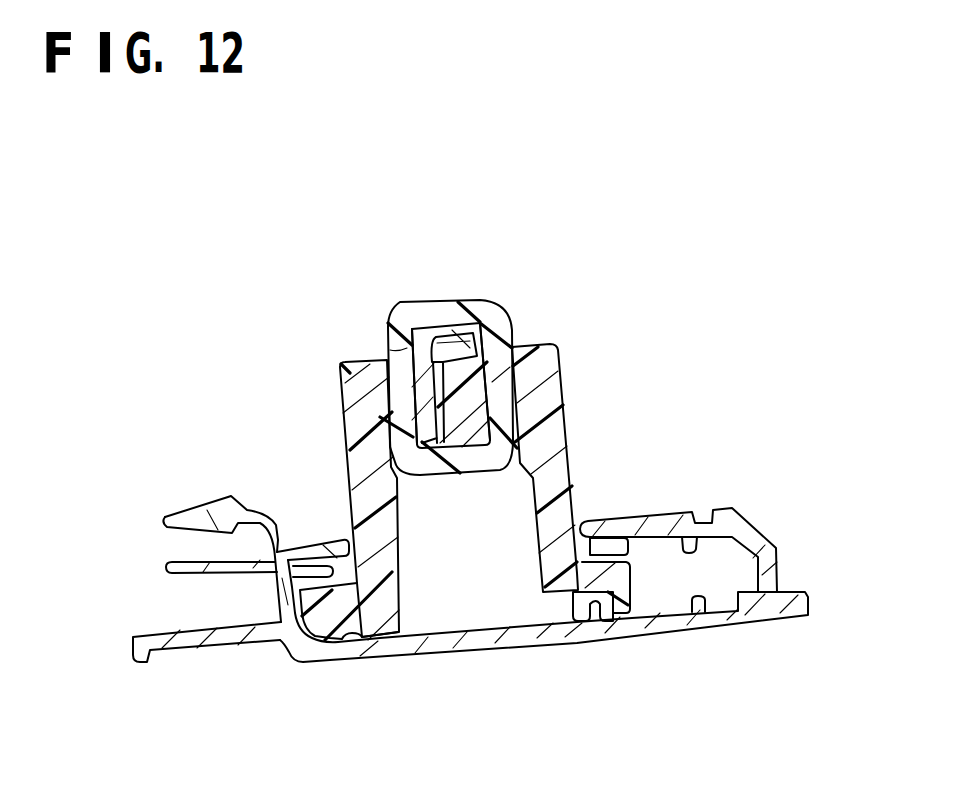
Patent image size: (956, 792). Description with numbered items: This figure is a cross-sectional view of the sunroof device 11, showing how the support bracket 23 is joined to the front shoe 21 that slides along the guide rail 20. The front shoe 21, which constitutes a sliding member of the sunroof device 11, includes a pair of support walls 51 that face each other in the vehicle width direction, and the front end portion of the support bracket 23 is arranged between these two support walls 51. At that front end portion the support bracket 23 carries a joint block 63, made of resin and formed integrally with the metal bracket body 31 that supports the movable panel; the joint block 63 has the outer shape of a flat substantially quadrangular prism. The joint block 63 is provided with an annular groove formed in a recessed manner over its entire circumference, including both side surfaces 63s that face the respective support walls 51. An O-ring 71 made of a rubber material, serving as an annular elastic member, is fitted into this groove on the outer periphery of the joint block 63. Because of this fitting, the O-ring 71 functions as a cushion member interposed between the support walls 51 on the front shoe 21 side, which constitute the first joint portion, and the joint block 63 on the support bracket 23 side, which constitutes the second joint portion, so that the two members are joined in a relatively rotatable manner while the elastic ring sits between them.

The sunroof device 11 is at (152, 215).
The guide rail 20 is at (720, 512).
The front shoe 21 is at (547, 347).
The support bracket 23 is at (391, 317).
The bracket body 31 is at (431, 447).
The support wall 51 is at (350, 422).
The joint block 63 is at (447, 335).
The side surface 63s is at (390, 348).
The O-ring 71 is at (497, 302).